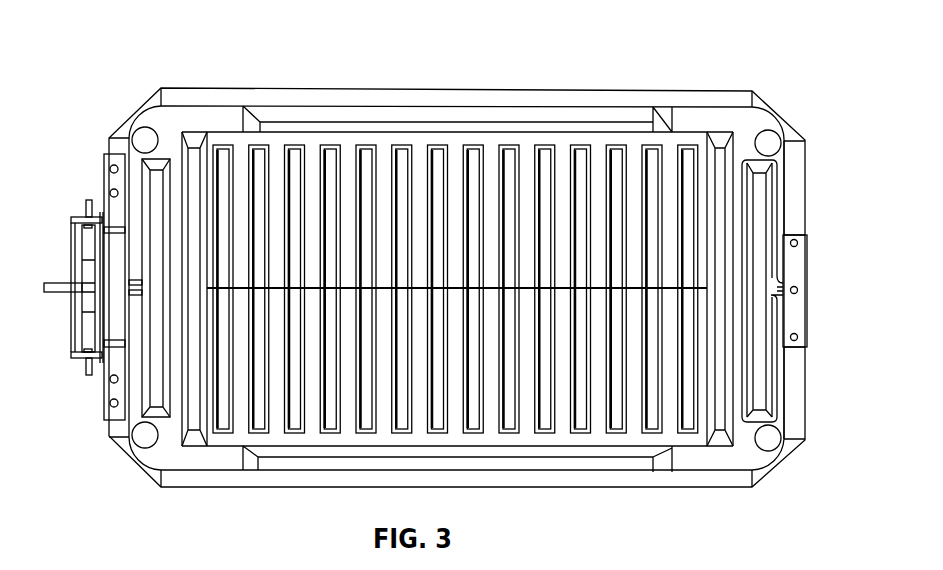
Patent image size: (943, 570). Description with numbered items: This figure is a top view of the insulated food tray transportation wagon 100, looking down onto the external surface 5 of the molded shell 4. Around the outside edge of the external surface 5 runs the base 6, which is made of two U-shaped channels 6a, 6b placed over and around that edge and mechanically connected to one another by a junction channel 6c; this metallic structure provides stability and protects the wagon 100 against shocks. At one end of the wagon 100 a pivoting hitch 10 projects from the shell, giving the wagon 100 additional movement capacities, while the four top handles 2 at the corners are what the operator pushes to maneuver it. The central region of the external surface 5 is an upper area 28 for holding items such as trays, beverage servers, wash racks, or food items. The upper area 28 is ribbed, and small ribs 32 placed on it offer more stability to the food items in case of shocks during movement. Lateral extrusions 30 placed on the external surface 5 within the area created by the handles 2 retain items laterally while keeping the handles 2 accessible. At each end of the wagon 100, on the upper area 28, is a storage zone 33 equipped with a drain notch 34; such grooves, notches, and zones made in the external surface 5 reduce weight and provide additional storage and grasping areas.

The insulated food tray transportation wagon 100 is at (131, 44).
The top handle 2 is at (771, 139).
The molded shell 4 is at (175, 118).
The external surface 5 is at (232, 104).
The base 6 is at (390, 100).
The U-shaped channel 6a is at (793, 210).
The U-shaped channel 6b is at (793, 382).
The junction channel 6c is at (793, 316).
The pivoting hitch 10 is at (68, 250).
The upper area 28 is at (607, 81).
The lateral extrusion 30 is at (447, 114).
The small rib 32 is at (292, 148).
The storage zone 33 is at (758, 260).
The drain notch 34 is at (798, 290).